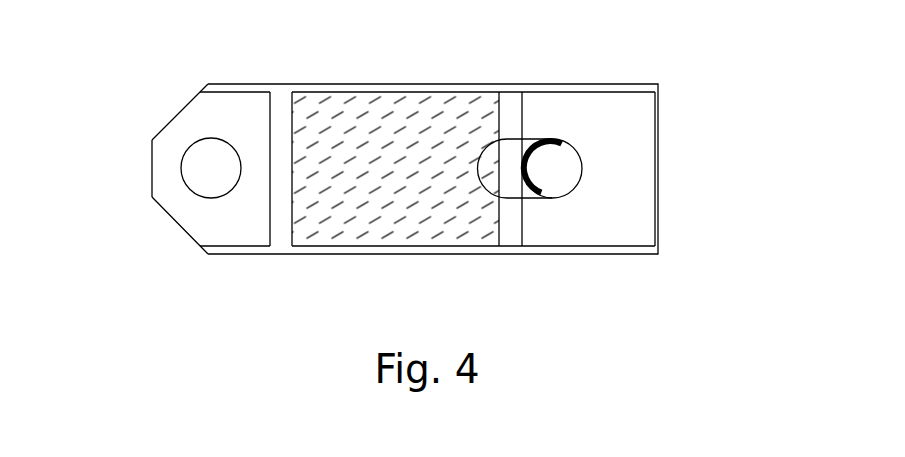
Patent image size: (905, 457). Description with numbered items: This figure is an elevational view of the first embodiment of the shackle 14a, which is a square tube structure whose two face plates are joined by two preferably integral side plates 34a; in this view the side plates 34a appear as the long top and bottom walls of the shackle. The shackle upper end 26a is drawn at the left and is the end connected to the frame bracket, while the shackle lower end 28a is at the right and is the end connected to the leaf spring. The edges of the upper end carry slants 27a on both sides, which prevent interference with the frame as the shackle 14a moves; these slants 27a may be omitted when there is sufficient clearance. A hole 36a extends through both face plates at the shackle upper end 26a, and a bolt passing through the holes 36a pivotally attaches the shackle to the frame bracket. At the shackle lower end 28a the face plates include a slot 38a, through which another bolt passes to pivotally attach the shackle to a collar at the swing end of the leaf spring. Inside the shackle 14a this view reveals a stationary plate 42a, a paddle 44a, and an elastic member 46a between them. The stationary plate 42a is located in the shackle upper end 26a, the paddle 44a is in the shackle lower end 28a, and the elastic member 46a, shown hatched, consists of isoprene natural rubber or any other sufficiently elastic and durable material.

The shackle 14a is at (652, 63).
The shackle upper end 26a is at (163, 175).
The slants 27a is at (178, 113).
The shackle lower end 28a is at (618, 168).
The side plates 34a is at (348, 84).
The hole 36a is at (210, 168).
The slot 38a is at (553, 168).
The stationary plate 42a is at (278, 88).
The paddle 44a is at (510, 115).
The elastic member 46a is at (408, 113).